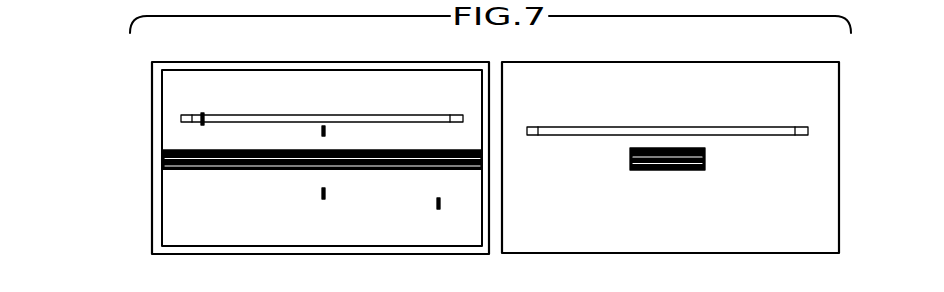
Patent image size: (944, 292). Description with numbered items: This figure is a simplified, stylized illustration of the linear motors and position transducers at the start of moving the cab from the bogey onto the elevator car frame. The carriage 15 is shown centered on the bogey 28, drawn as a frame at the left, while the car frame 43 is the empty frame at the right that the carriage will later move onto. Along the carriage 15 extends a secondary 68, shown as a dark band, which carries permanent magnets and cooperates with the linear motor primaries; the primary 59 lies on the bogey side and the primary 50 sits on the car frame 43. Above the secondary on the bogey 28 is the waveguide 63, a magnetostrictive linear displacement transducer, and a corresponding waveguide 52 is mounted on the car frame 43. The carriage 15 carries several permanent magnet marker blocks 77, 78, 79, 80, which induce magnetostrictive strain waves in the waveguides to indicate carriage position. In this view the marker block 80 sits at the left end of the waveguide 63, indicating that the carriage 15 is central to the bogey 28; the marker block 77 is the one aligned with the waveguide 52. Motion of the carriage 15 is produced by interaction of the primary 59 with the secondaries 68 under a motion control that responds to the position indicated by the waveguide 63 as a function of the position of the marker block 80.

The bogey 28 is at (152, 80).
The cab carriage 15 is at (162, 135).
The waveguide 63 is at (196, 123).
The marker block 80 is at (203, 113).
The marker block 77 is at (326, 129).
The linear motor primary 59 is at (426, 150).
The secondary 68 is at (278, 171).
The marker block 79 is at (326, 190).
The marker block 78 is at (441, 200).
The car frame 43 is at (841, 138).
The waveguide 52 is at (723, 128).
The linear motor primary 50 is at (678, 170).